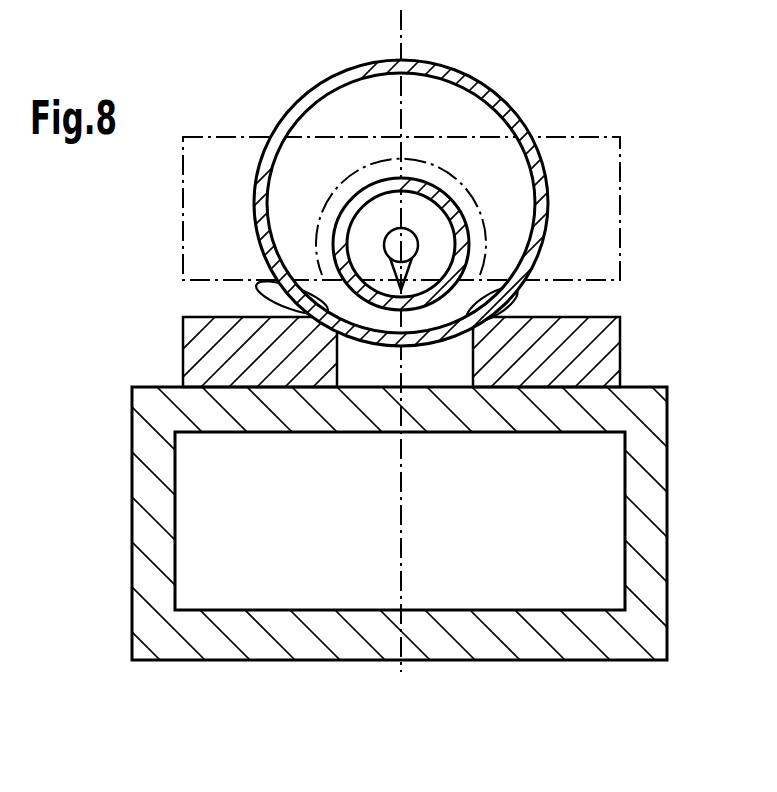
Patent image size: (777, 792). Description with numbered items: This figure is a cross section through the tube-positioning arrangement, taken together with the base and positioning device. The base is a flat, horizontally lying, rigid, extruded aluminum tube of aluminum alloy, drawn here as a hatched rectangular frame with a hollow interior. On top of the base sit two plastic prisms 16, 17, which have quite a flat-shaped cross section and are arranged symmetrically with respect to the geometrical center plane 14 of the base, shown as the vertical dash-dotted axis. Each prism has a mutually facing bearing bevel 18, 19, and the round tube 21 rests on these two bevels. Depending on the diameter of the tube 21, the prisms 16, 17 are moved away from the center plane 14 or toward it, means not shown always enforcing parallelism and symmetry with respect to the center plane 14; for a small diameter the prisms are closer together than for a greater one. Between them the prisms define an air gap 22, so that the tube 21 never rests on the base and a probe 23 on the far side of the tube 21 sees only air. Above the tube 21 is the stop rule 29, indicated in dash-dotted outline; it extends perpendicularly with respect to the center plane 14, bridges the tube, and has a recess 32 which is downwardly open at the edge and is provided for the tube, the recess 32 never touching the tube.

The geometrical center plane 14 is at (402, 48).
The prism 16 is at (196, 345).
The prism 17 is at (603, 343).
The bearing bevel 18 is at (277, 297).
The bearing bevel 19 is at (508, 284).
The tube 21 is at (297, 104).
The air gap 22 is at (448, 390).
The probe 23 is at (392, 267).
The stop rule 29 is at (620, 206).
The recess 32 is at (450, 174).